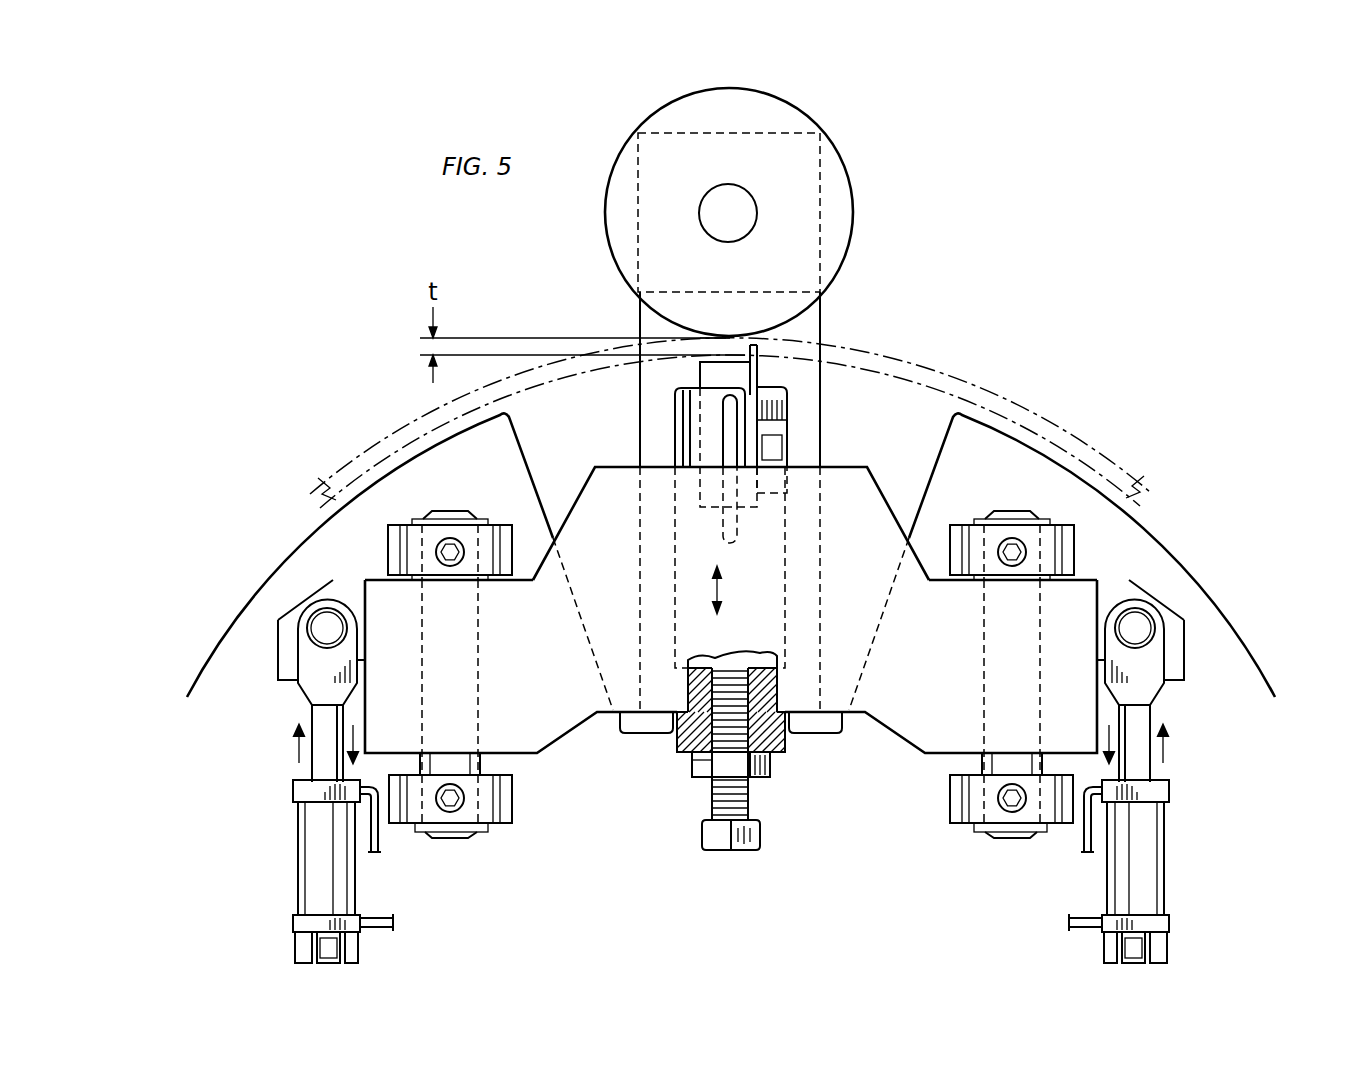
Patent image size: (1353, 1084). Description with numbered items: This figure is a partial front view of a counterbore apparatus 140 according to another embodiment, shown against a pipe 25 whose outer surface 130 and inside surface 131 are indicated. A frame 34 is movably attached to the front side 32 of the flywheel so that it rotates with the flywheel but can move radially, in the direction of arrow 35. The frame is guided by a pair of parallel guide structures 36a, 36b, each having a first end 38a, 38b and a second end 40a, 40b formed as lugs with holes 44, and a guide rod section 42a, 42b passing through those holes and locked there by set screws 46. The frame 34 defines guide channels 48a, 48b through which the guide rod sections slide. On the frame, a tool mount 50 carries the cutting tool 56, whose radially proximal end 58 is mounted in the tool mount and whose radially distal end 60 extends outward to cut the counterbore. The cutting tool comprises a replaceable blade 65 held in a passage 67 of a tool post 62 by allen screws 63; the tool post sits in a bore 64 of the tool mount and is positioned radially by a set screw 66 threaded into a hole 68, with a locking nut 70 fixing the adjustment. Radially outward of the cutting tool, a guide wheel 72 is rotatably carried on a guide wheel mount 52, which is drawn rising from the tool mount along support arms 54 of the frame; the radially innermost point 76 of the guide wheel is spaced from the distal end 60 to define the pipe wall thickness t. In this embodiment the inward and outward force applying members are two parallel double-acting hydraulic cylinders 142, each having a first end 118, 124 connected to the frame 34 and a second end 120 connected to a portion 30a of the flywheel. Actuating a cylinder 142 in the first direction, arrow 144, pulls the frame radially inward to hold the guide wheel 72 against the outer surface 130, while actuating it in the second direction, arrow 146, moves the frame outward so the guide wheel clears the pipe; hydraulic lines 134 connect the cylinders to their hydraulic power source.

The pipe 25 is at (980, 380).
The portion of flywheel 30a is at (1139, 948).
The front side of flywheel 32 is at (1163, 553).
The frame 34 is at (889, 678).
The arrow denoting radial direction 35 is at (721, 594).
The guide structure 36a is at (1012, 507).
The guide structure 36b is at (450, 507).
The first end of guide structure 38a is at (1074, 548).
The first end of guide structure 38b is at (388, 548).
The second end of guide structure 40a is at (950, 800).
The second end of guide structure 40b is at (512, 800).
The guide rod section 42a is at (982, 765).
The guide rod section 42b is at (480, 765).
The holes 44 is at (984, 825).
The set screws 46 is at (1012, 785).
The guide channel 48a is at (984, 680).
The guide channel 48b is at (478, 680).
The tool mount 50 is at (615, 467).
The guide wheel mount 52 is at (822, 218).
The roller support arm 54 is at (822, 326).
The cutting tool 56 is at (803, 380).
The radially proximal end of cutting tool 58 is at (697, 686).
The radially distal end of cutting tool 60 is at (752, 352).
The tool post 62 is at (675, 415).
The allen screws 63 is at (788, 447).
The bore 64 is at (677, 625).
The replaceable blade 65 is at (700, 368).
The set screw 66 is at (752, 798).
The passage 67 is at (708, 505).
The hole 68 is at (695, 755).
The locking nut 70 is at (773, 757).
The guide wheel 72 is at (826, 136).
The radially innermost point of guide wheel 76 is at (715, 340).
The first end of inward force applying member 118 is at (1162, 633).
The second end of inward force applying member 120 is at (1102, 942).
The first end of outward force applying member 124 is at (1150, 638).
The outer surface of pipe 130 is at (1016, 400).
The inside surface of pipe 131 is at (905, 385).
The hydraulic lines 134 is at (1084, 853).
The counterbore apparatus 140 is at (1115, 316).
The double-acting hydraulic cylinder 142 is at (1164, 862).
The arrow showing first direction 144 is at (1107, 738).
The arrow showing second direction 146 is at (1165, 750).